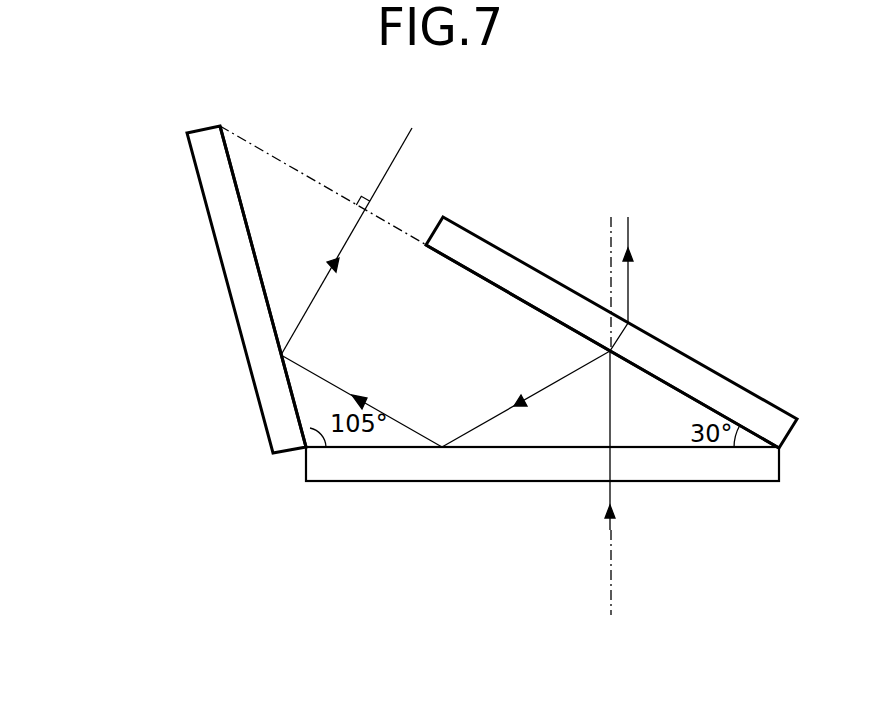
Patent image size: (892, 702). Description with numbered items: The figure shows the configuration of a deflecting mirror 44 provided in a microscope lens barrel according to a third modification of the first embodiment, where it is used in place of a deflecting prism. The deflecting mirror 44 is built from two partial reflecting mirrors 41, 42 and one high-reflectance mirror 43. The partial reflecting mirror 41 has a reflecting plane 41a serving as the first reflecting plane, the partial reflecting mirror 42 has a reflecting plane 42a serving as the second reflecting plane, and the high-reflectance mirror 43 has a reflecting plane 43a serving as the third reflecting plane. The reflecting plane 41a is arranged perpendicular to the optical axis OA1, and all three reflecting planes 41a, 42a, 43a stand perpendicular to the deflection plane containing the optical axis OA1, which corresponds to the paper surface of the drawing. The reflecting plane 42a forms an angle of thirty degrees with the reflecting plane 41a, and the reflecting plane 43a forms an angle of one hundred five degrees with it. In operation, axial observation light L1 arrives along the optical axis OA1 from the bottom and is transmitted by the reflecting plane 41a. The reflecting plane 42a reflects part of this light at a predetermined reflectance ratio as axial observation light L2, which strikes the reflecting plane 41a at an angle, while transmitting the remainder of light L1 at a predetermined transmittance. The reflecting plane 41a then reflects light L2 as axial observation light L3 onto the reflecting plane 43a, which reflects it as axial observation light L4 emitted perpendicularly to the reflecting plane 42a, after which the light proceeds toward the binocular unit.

The partial reflecting mirror 41 is at (410, 465).
The reflecting plane 41a is at (505, 447).
The partial reflecting mirror 42 is at (750, 402).
The reflecting plane 42a is at (682, 398).
The high-reflectance mirror 43 is at (247, 305).
The reflecting plane 43a is at (241, 200).
The deflecting mirror 44 is at (670, 141).
The axial observation light L1 is at (612, 528).
The axial observation light L2 is at (498, 413).
The axial observation light L3 is at (384, 410).
The axial observation light L4 is at (305, 305).
The optical axis OA1 is at (612, 592).